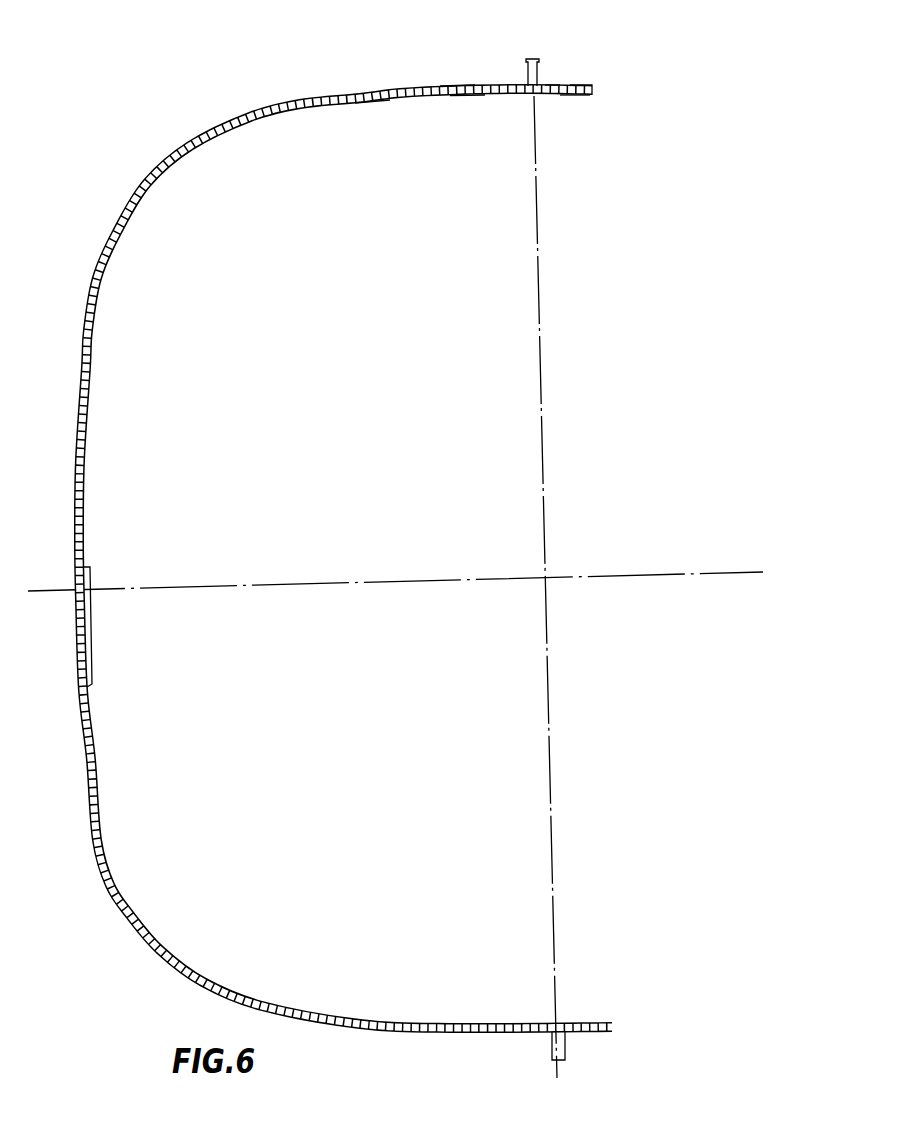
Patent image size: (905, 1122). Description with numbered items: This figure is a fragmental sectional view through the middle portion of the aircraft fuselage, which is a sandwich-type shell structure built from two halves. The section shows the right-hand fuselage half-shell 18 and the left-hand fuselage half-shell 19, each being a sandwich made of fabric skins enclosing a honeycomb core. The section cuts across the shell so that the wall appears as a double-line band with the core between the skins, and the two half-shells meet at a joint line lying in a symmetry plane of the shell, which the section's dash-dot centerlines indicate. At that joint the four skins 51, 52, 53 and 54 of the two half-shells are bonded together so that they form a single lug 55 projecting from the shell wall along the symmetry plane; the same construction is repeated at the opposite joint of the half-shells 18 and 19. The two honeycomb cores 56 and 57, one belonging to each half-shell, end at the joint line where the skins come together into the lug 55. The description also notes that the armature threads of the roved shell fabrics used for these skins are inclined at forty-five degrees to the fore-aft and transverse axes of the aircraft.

The right-hand fuselage half-shell 18 is at (82, 502).
The left-hand fuselage half-shell 19 is at (577, 1026).
The skin 51 is at (458, 86).
The skin 52 is at (467, 101).
The skin 53 is at (577, 84).
The skin 54 is at (572, 98).
The lug 55 is at (527, 70).
The honeycomb core 56 is at (370, 102).
The honeycomb core 57 is at (553, 84).